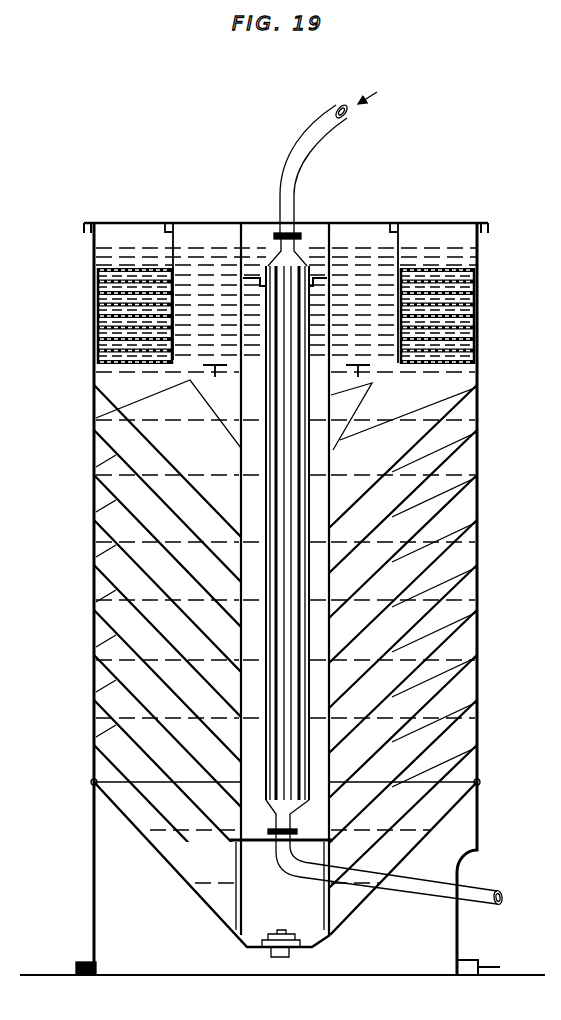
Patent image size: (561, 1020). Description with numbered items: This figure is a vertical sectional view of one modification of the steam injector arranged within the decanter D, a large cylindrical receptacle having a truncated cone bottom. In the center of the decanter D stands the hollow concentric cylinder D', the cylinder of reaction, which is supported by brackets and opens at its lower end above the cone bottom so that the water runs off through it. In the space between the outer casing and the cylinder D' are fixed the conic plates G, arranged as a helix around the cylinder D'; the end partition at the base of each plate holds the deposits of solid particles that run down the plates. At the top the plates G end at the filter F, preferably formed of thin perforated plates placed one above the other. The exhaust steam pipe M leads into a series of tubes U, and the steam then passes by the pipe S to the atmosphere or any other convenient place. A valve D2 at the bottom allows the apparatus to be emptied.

The decanter D is at (282, 599).
The concentric cylinder D' is at (281, 579).
The valve D2 is at (268, 948).
The filter F is at (152, 344).
The conic plates G is at (285, 661).
The tubes U is at (298, 543).
The exhaust steam pipe M is at (327, 162).
The pipe S is at (389, 869).